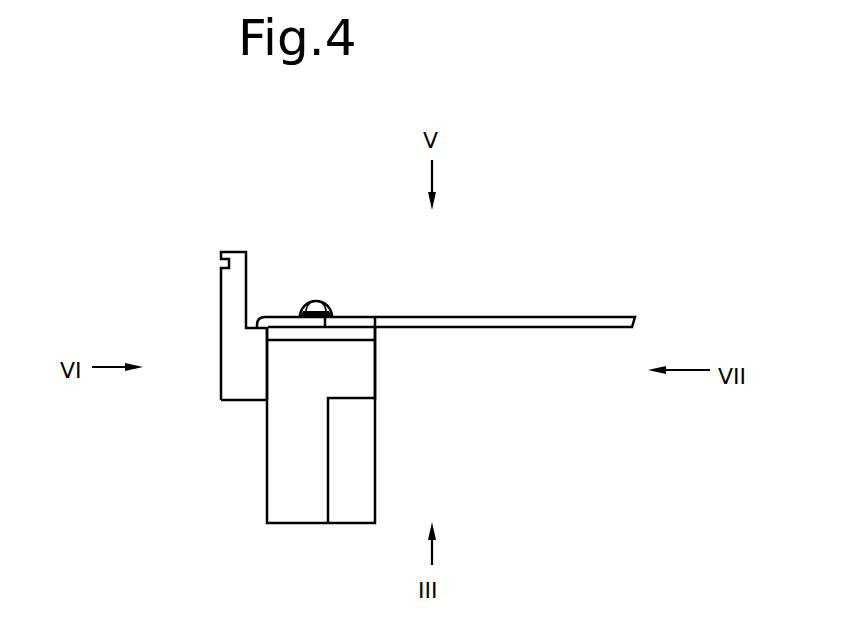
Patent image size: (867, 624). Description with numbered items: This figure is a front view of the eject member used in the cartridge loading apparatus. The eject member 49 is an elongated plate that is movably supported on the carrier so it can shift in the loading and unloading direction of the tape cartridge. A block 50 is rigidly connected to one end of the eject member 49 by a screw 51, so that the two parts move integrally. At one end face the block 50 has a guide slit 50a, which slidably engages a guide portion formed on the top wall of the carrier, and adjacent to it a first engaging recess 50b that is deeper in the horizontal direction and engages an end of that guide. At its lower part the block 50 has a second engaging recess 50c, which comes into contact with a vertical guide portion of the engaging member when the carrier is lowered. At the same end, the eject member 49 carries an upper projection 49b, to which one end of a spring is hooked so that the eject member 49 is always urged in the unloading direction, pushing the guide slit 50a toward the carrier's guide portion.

The eject member 49 is at (482, 316).
The upper projection 49b is at (238, 252).
The block 50 is at (345, 351).
The guide slit 50a is at (282, 333).
The first engaging recess 50b is at (370, 333).
The second engaging recess 50c is at (328, 455).
The screw 51 is at (320, 302).